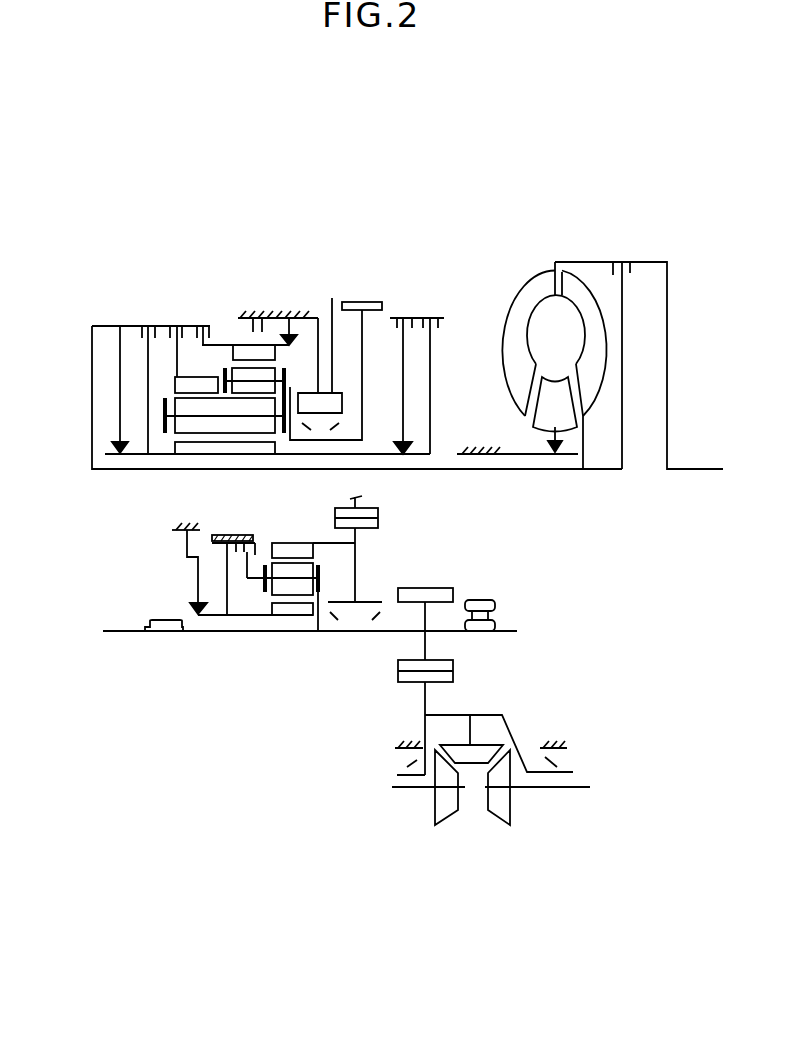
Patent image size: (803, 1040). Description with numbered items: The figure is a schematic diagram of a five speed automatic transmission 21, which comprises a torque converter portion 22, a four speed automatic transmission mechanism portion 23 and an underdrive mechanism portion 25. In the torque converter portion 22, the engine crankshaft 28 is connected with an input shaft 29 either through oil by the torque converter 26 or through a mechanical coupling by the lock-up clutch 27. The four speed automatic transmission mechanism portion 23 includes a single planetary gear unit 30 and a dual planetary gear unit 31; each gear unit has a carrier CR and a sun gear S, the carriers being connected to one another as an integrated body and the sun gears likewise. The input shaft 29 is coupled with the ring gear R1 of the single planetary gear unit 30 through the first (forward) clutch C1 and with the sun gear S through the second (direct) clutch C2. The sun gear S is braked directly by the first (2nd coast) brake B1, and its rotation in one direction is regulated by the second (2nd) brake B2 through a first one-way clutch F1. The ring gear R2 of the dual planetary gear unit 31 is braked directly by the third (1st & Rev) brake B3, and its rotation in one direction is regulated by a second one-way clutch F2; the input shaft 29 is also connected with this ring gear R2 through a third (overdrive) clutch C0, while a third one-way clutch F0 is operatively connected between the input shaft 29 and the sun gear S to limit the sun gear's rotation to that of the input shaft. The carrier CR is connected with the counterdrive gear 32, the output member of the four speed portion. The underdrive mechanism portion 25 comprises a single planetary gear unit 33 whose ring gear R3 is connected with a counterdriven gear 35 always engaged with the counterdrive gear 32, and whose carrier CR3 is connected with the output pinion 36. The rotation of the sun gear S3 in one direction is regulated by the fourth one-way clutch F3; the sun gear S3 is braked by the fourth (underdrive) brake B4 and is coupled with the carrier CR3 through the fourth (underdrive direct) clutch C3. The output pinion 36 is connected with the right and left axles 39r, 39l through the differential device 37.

The five speed automatic transmission 21 is at (125, 232).
The torque converter portion 22 is at (597, 349).
The four speed automatic transmission mechanism portion 23 is at (267, 371).
The underdrive mechanism portion 25 is at (328, 680).
The torque converter 26 is at (535, 296).
The lock-up clutch 27 is at (632, 272).
The engine crankshaft 28 is at (703, 466).
The input shaft 29 is at (550, 470).
The single planetary gear unit 30 is at (194, 346).
The dual planetary gear unit 31 is at (232, 336).
The counterdrive gear 32 is at (365, 303).
The single planetary gear unit 33 is at (287, 536).
The counterdriven gear 35 is at (372, 526).
The output pinion 36 is at (433, 590).
The differential device 37 is at (511, 714).
The left axle 39l is at (402, 792).
The right axle 39r is at (560, 792).
The sun gear S is at (210, 455).
The ring gear of the single planetary gear unit R1 is at (196, 374).
The ring gear of the dual planetary gear unit R2 is at (246, 350).
The carrier CR is at (286, 389).
The third (overdrive) clutch C0 is at (204, 325).
The first (forward) clutch C1 is at (177, 341).
The second (direct) clutch C2 is at (150, 379).
The fourth (underdrive direct) clutch C3 is at (273, 566).
The first (2nd coast) brake B1 is at (432, 374).
The second (2nd) brake B2 is at (417, 368).
The third (1st & Rev) brake B3 is at (278, 313).
The fourth (underdrive) brake B4 is at (233, 564).
The third one-way clutch F0 is at (128, 389).
The first one-way clutch F1 is at (397, 435).
The second one-way clutch F2 is at (294, 320).
The fourth one-way clutch F3 is at (242, 569).
The ring gear of the underdrive planetary gear unit R3 is at (300, 550).
The carrier of the underdrive planetary gear unit CR3 is at (320, 585).
The sun gear of the underdrive planetary gear unit S3 is at (296, 616).